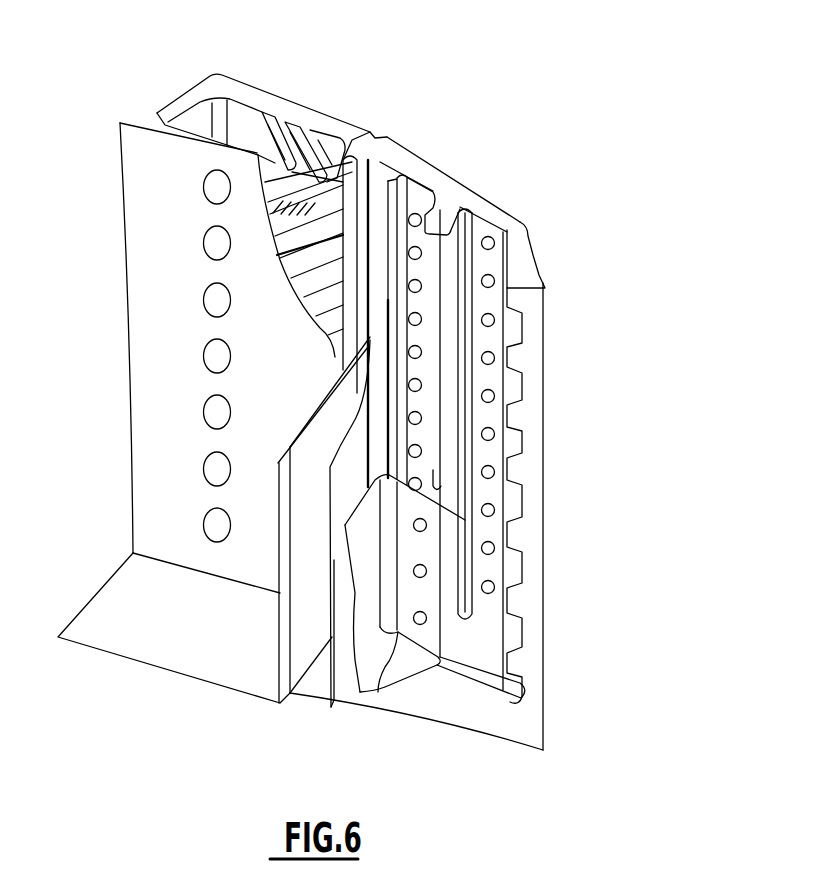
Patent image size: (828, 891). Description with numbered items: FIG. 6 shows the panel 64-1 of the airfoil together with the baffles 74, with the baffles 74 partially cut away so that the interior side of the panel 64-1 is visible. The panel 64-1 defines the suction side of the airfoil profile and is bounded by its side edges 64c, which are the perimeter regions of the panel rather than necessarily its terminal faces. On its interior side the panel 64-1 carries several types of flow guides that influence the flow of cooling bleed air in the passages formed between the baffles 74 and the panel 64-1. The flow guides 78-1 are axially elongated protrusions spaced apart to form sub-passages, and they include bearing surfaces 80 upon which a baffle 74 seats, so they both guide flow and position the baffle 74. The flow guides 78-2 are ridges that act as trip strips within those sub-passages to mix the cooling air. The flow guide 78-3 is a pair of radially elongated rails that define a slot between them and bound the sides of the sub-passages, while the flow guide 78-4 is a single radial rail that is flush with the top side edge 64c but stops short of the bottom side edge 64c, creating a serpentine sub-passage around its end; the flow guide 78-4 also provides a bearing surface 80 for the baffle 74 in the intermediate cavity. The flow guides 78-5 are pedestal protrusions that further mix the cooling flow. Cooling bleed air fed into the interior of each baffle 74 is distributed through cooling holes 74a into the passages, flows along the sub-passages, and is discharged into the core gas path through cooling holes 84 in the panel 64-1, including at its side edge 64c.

The baffle 74 is at (138, 160).
The cooling holes 74a is at (204, 248).
The flow guides 78-1 is at (262, 112).
The flow guides 78-2 is at (356, 146).
The flow guide 78-3 is at (380, 277).
The flow guide 78-4 is at (450, 410).
The flow guides 78-5 is at (422, 352).
The bearing surfaces 80 is at (299, 190).
The cooling holes 84 is at (354, 130).
The side edges 64c is at (447, 208).
The panel 64-1 is at (585, 733).